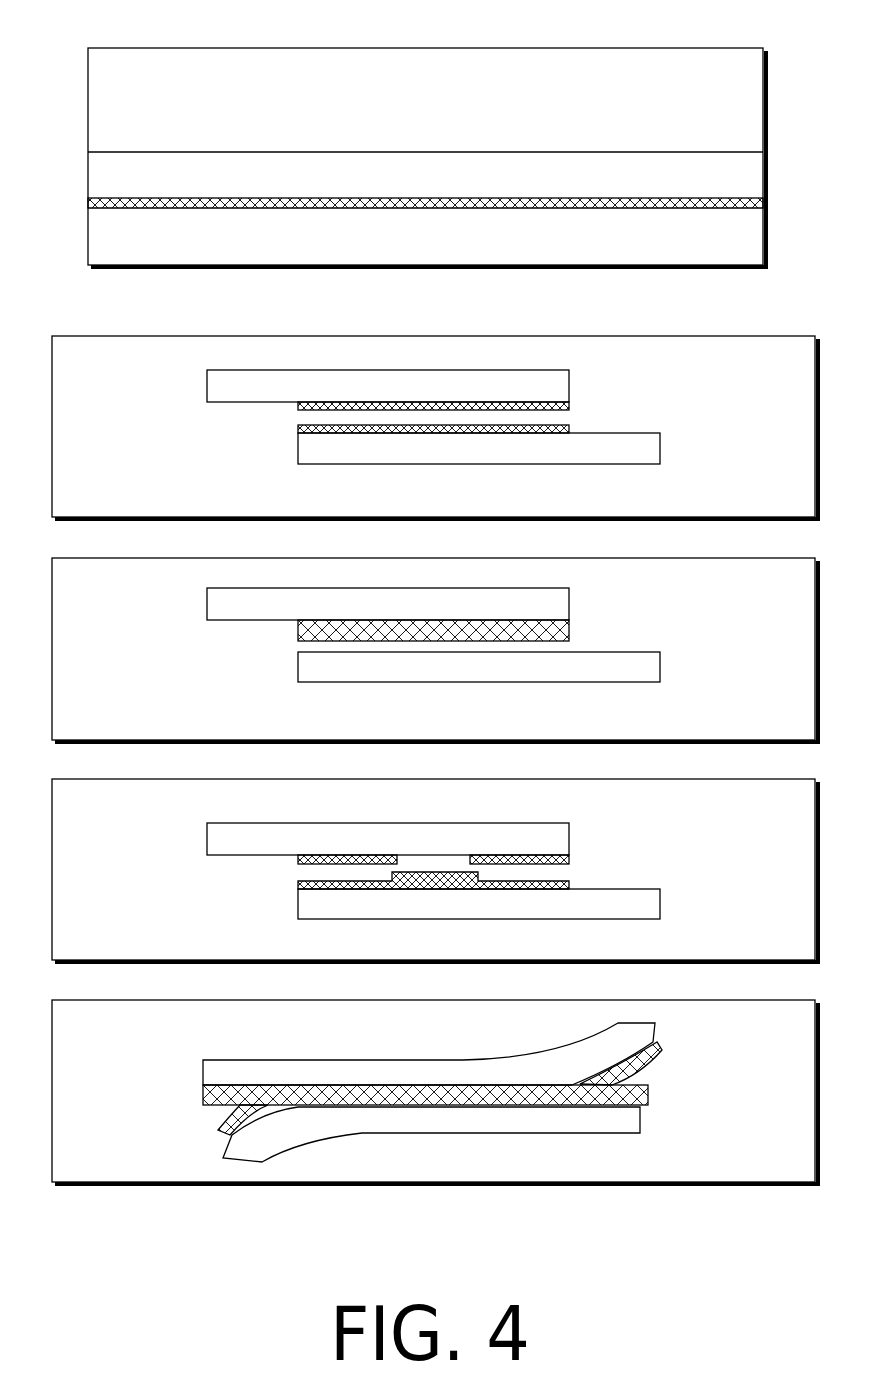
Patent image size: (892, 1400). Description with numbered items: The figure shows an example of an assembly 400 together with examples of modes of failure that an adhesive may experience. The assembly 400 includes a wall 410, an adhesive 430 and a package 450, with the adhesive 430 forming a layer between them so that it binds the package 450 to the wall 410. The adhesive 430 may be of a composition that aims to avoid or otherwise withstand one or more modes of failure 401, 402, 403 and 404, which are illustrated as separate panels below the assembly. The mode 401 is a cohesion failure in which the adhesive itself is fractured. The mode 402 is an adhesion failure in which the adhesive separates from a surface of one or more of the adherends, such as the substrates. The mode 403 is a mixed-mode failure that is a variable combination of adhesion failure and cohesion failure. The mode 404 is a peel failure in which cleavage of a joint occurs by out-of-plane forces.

The assembly 400 is at (490, 24).
The package 450 is at (463, 189).
The wall 410 is at (445, 247).
The adhesive 430 is at (618, 200).
The mode of failure (cohesion failure) 401 is at (165, 371).
The mode of failure (adhesion failure) 402 is at (157, 594).
The mode of failure (mixed-mode failure) 403 is at (160, 816).
The mode of failure (peel failure) 404 is at (164, 1036).